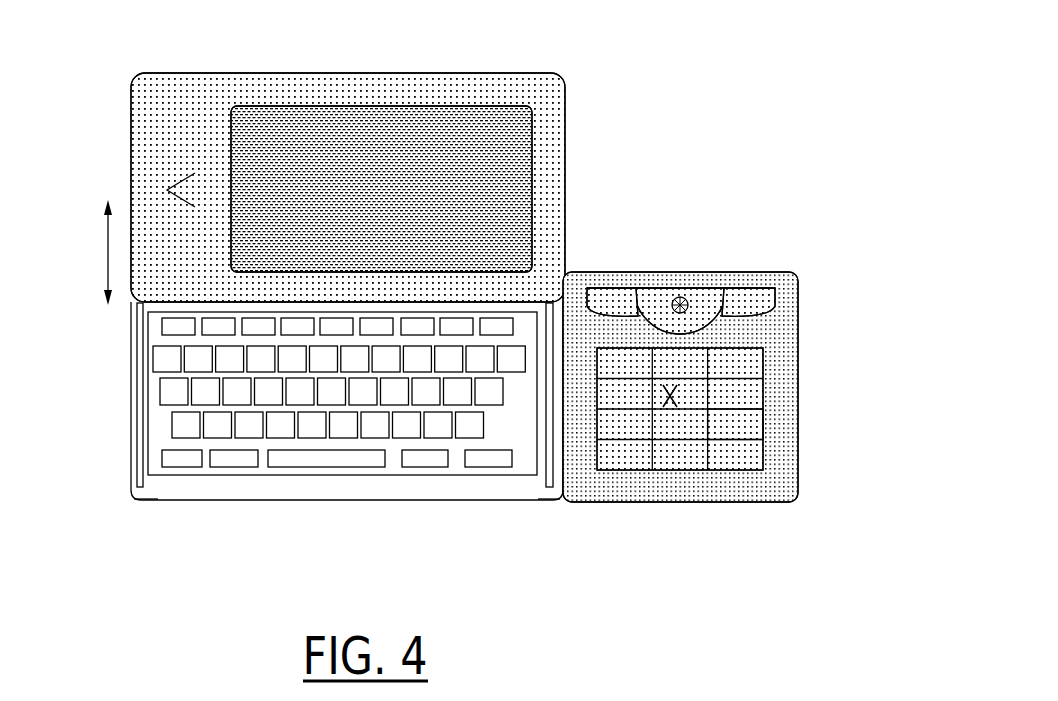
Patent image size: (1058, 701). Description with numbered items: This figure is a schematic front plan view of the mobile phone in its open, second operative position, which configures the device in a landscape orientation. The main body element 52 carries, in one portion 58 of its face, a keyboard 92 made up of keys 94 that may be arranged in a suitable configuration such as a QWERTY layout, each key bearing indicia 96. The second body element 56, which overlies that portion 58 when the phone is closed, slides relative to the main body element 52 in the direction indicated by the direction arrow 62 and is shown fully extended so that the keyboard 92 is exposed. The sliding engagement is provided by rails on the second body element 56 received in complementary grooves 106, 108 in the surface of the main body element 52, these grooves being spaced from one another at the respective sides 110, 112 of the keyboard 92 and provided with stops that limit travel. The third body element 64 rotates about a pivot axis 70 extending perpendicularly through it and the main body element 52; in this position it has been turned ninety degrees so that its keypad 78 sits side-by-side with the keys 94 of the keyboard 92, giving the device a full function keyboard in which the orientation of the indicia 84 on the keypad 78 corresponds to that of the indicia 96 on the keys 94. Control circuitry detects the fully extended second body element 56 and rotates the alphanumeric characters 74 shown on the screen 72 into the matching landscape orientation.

The main body element 52 is at (121, 411).
The second body element 56 is at (421, 163).
The portion of the main body element 58 is at (414, 404).
The direction arrow 62 is at (107, 247).
The third body element 64 is at (750, 352).
The pivot axis 70 is at (690, 389).
The screen 72 is at (471, 148).
The alphanumeric characters 74 is at (323, 147).
The keypad 78 is at (763, 428).
The indicia 84 is at (767, 378).
The keyboard 92 is at (325, 462).
The keys 94 is at (378, 438).
The indicia 96 is at (458, 349).
The groove 106 is at (133, 483).
The groove 108 is at (553, 477).
The side of the keyboard 110 is at (145, 503).
The side of the keyboard 112 is at (550, 512).